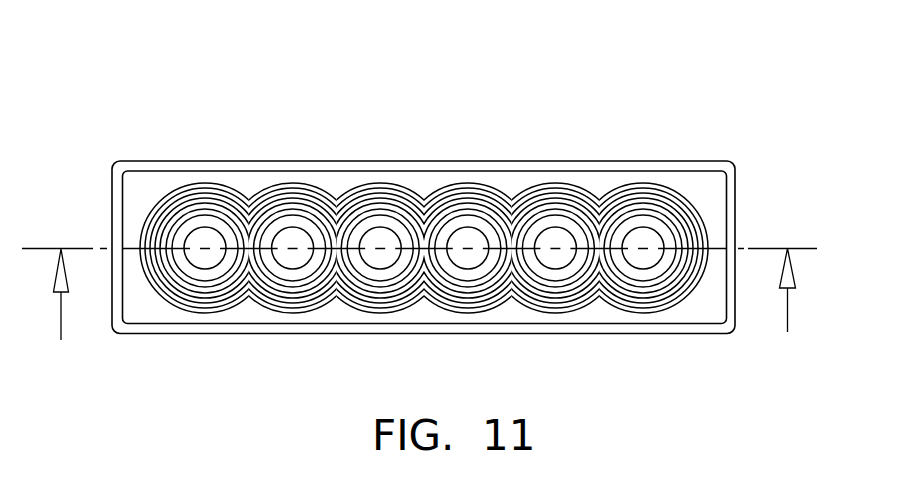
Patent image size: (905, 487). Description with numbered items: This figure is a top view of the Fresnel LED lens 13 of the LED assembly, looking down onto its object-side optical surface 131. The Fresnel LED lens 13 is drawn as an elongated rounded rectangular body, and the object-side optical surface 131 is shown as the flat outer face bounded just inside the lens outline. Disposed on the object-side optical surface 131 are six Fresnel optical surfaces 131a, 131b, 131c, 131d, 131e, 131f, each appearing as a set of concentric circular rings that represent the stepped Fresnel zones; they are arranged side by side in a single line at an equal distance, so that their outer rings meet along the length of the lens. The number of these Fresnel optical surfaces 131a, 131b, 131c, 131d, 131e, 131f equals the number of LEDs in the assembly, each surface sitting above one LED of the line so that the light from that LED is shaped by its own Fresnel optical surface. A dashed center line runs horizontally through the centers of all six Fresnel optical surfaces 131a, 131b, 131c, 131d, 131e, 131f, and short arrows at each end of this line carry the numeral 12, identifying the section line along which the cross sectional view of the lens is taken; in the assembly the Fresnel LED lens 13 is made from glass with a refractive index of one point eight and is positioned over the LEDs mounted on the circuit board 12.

The Fresnel LED lens 13 is at (128, 97).
The object-side optical surface 131 is at (708, 192).
The Fresnel optical surface 131a is at (647, 183).
The Fresnel optical surface 131b is at (557, 183).
The Fresnel optical surface 131c is at (473, 183).
The Fresnel optical surface 131d is at (385, 183).
The Fresnel optical surface 131e is at (297, 183).
The Fresnel optical surface 131f is at (210, 183).
The circuit board 12 is at (422, 295).